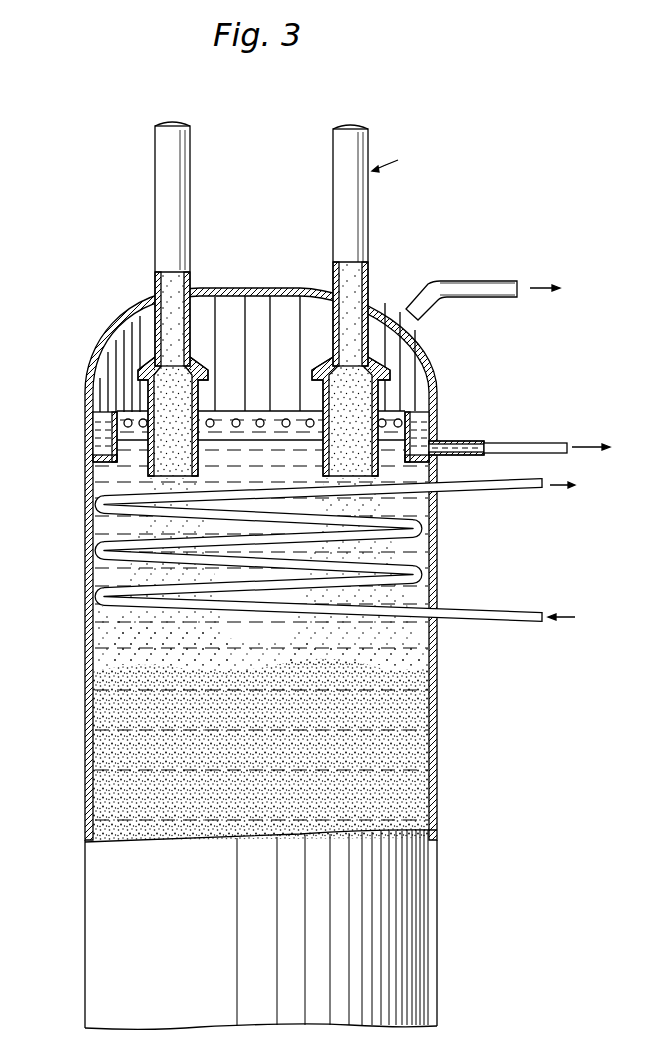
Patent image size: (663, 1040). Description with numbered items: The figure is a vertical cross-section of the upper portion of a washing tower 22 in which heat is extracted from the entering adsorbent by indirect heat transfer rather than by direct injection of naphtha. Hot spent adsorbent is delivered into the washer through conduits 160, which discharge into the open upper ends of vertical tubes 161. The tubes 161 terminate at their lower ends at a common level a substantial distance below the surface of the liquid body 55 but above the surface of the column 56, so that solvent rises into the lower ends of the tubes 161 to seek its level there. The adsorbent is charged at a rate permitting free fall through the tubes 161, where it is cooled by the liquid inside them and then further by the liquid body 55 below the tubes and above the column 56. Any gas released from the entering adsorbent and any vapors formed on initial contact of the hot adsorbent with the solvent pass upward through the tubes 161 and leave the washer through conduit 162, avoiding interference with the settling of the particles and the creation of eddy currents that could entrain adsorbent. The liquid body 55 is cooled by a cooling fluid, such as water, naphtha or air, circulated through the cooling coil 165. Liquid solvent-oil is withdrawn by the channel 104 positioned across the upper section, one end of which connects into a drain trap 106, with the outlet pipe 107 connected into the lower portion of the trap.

The adsorption vessel 22 is at (85, 575).
The liquid body 55 is at (100, 477).
The column 56 is at (95, 762).
The channel 104 is at (128, 412).
The drain trap 106 is at (418, 413).
The outlet pipe 107 is at (560, 455).
The conduit 160 is at (152, 178).
The vertical tube 161 is at (205, 395).
The conduit 162 is at (503, 267).
The cooling coil 165 is at (398, 584).